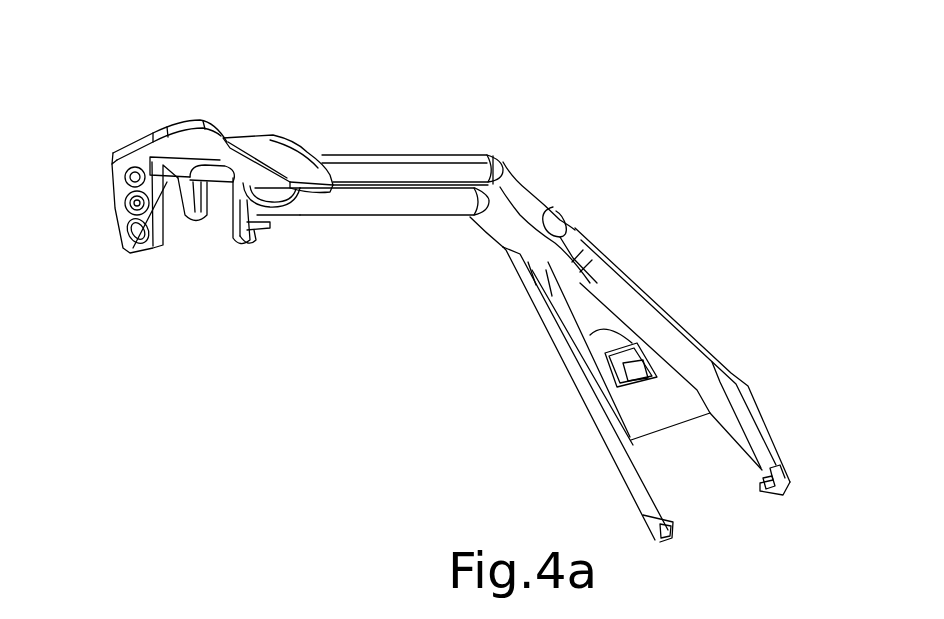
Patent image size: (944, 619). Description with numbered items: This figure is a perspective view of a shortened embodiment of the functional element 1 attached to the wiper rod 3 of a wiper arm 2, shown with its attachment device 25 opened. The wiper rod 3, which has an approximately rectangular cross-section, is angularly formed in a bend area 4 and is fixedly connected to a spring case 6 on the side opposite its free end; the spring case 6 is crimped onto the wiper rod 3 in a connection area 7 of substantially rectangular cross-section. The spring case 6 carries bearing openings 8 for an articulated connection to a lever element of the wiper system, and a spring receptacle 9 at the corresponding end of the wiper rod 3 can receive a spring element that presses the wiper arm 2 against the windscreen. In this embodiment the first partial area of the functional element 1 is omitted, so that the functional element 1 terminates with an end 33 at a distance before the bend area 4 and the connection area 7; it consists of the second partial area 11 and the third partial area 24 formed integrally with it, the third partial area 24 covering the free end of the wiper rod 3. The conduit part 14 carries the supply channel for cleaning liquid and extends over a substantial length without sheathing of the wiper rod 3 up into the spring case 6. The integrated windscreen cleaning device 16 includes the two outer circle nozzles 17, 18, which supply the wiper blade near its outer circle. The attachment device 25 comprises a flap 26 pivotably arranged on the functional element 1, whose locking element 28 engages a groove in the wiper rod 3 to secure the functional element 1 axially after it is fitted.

The functional element 1 is at (238, 78).
The wiper arm 2 is at (678, 230).
The wiper rod 3 is at (421, 154).
The bend area 4 is at (501, 165).
The spring case 6 is at (680, 345).
The connection area 7 is at (575, 232).
The bearing openings 8 is at (648, 478).
The spring receptacle 9 is at (590, 398).
The second partial area 11 is at (297, 116).
The conduit part 14 is at (424, 210).
The windscreen cleaning device 16 is at (258, 294).
The outer circle nozzle 17 is at (135, 246).
The outer circle nozzle 18 is at (126, 205).
The third partial area 24 is at (166, 104).
The attachment device 25 is at (283, 235).
The flap 26 is at (236, 245).
The locking element 28 is at (262, 233).
The end 33 is at (320, 152).